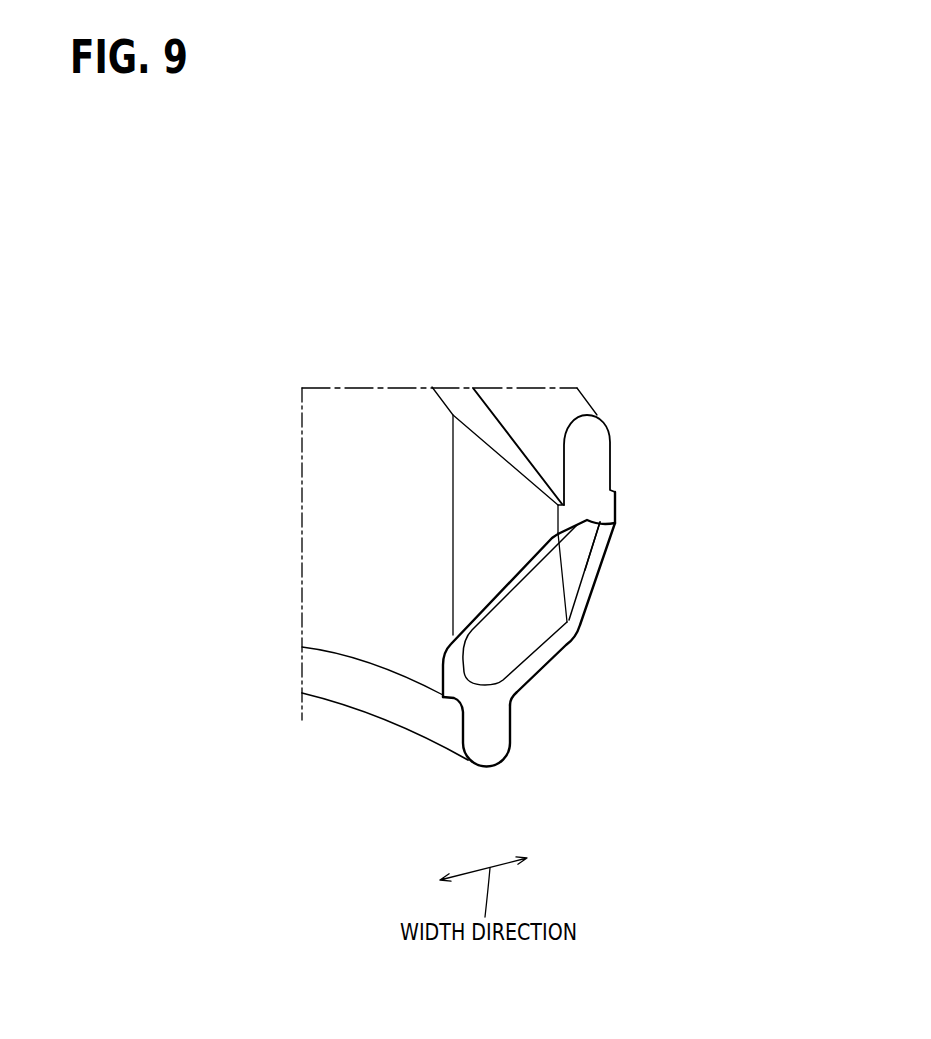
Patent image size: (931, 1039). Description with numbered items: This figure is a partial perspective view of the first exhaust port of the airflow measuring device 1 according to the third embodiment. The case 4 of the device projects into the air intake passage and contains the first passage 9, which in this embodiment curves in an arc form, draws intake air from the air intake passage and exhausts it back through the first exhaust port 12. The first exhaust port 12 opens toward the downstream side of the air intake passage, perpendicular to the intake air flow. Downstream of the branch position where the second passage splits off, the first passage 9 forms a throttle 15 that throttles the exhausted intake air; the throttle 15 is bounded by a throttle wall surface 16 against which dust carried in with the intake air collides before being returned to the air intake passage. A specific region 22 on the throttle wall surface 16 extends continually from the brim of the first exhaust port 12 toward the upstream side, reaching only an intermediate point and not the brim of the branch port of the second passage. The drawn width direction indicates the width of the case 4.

The airflow measuring device 1 is at (700, 213).
The case 4 is at (308, 270).
The first passage 9 is at (534, 731).
The first exhaust port 12 is at (595, 571).
The throttle 15 is at (503, 660).
The throttle wall surface 16 is at (542, 632).
The specific region 22 is at (583, 540).